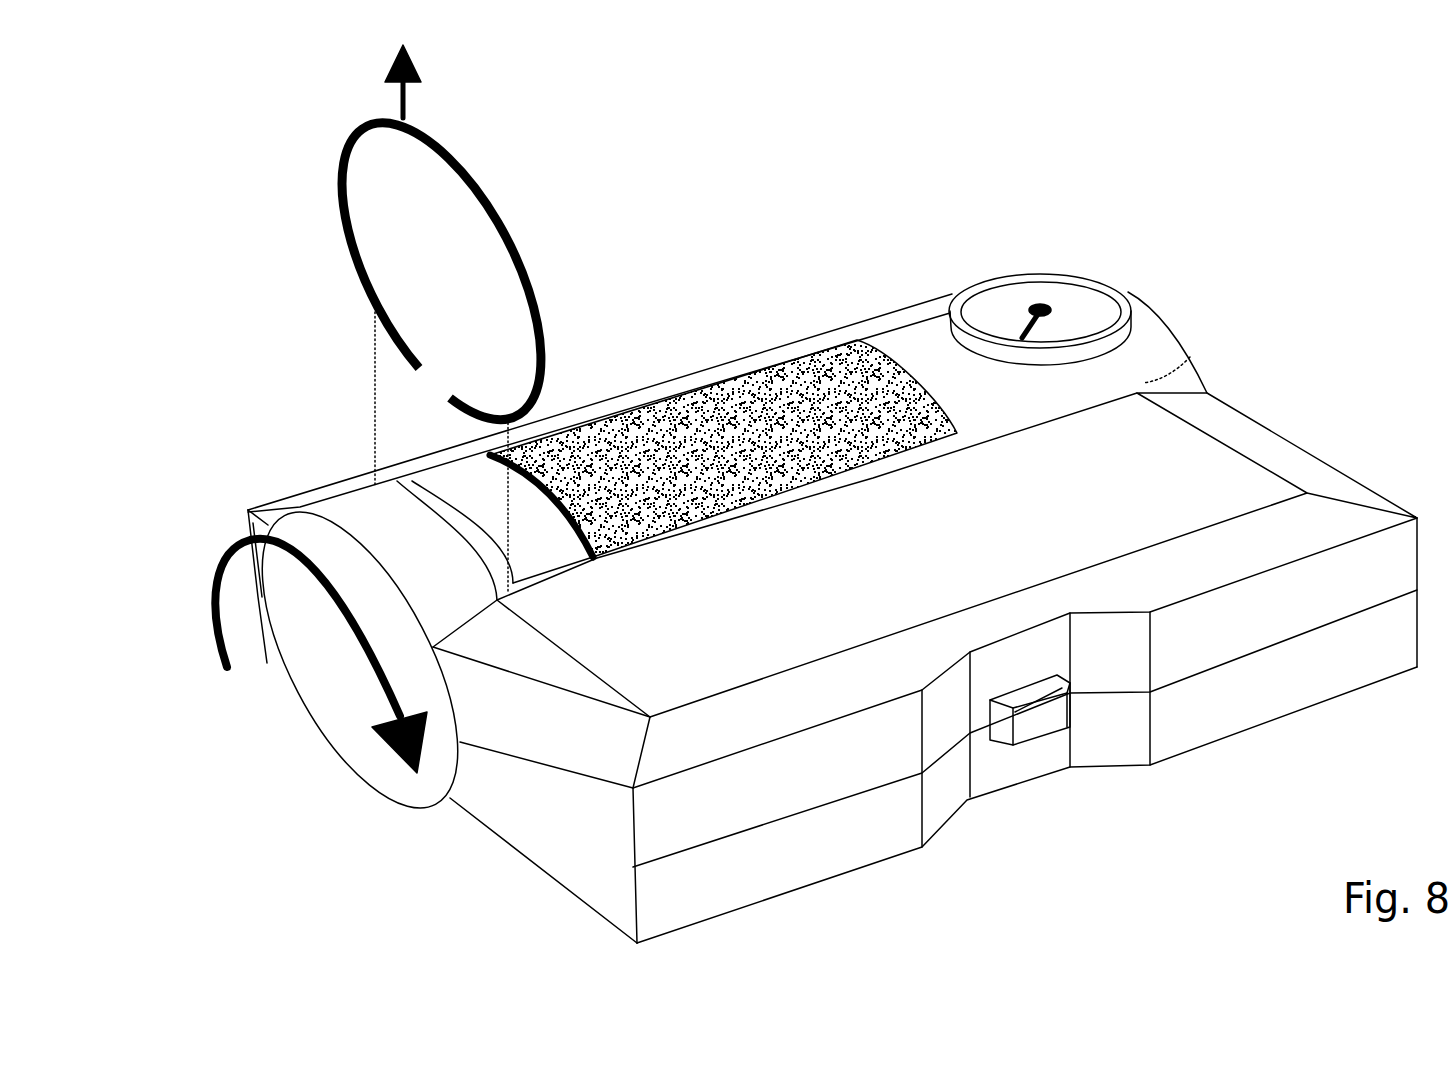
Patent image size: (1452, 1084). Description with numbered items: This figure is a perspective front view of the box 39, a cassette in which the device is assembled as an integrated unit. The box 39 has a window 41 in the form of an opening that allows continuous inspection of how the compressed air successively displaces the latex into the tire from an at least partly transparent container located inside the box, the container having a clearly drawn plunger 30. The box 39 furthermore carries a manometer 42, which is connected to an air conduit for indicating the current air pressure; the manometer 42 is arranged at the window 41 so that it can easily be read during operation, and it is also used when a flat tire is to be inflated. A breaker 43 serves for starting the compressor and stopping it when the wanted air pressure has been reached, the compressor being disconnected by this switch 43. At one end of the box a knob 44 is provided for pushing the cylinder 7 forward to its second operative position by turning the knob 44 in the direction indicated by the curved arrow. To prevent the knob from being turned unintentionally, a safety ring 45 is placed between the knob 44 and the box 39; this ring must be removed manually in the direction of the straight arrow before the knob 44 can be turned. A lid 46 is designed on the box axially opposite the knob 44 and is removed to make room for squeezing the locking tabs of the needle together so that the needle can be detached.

The cylinder 7 is at (742, 450).
The plunger 30 is at (597, 556).
The box 39 is at (1173, 798).
The window 41 is at (523, 567).
The manometer 42 is at (1087, 308).
The breaker 43 is at (1037, 727).
The knob 44 is at (323, 660).
The safety ring 45 is at (345, 240).
The lid 46 is at (1190, 357).